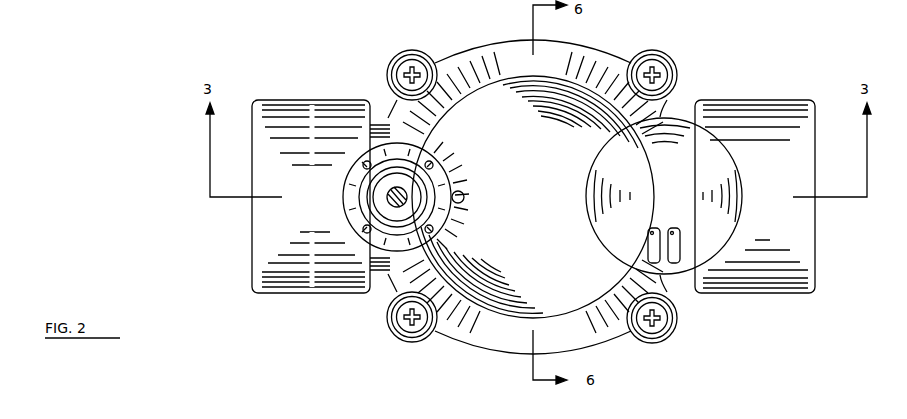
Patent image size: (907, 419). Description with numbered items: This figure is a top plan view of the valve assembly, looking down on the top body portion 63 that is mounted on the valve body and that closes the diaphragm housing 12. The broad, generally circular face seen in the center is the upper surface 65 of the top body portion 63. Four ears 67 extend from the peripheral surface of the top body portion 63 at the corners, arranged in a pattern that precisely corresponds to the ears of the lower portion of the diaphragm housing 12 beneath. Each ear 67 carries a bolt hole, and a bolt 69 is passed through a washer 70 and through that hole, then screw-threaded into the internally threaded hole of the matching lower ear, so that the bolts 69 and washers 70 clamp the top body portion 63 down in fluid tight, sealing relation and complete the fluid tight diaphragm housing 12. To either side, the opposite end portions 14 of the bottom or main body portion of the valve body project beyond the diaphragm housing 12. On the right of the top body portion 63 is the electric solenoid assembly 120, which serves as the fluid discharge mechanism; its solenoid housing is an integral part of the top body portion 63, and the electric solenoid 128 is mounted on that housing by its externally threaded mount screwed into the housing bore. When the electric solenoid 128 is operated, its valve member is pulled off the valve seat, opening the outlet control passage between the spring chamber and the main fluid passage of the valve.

The diaphragm housing 12 is at (505, 189).
The opposite end portions 14 is at (252, 250).
The top body portion 63 is at (587, 48).
The upper surface 65 is at (499, 142).
The ears 67 is at (395, 63).
The bolts 69 is at (400, 72).
The washers 70 is at (415, 51).
The electric solenoid assembly 120 is at (731, 149).
The electric solenoid 128 is at (673, 159).